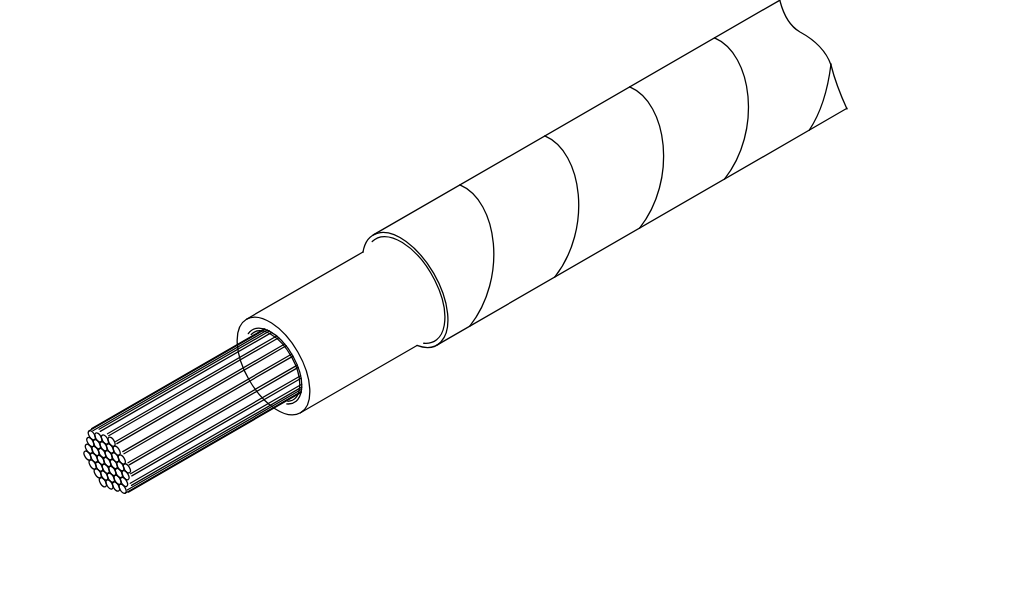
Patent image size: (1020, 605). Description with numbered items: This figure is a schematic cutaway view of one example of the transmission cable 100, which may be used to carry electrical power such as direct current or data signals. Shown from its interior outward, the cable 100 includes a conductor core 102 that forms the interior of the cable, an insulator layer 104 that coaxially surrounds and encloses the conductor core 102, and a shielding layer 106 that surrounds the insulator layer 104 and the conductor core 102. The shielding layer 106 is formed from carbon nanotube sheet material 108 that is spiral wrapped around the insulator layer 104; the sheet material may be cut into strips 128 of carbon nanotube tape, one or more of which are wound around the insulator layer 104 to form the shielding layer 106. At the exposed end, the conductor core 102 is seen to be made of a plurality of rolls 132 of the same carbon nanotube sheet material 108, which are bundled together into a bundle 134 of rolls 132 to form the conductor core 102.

The cable 100 is at (345, 203).
The conductor core 102 is at (180, 462).
The insulator layer 104 is at (364, 378).
The shielding layer 106 is at (619, 242).
The carbon nanotube sheet material 108 is at (686, 50).
The strips of carbon nanotube sheet material 128 is at (542, 138).
The rolls of carbon nanotube sheet material 132 is at (117, 490).
The bundle of rolls 134 is at (140, 402).